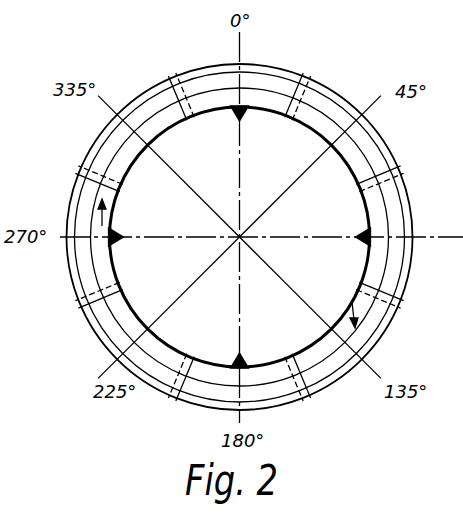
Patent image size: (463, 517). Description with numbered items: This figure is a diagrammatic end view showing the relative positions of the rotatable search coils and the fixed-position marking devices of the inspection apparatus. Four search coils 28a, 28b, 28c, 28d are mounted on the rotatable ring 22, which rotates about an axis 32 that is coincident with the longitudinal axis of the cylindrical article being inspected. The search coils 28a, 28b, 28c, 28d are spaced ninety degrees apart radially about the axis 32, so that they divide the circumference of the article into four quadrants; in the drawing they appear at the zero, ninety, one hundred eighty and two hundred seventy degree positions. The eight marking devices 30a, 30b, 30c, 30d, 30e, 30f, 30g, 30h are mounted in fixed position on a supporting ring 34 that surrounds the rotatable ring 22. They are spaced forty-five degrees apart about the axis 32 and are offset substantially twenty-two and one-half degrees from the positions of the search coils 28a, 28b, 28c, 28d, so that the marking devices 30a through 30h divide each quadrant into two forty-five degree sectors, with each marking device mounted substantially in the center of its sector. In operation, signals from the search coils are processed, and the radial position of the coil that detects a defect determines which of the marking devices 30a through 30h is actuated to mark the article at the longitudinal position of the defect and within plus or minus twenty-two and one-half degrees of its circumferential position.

The rotatable ring 22 is at (258, 100).
The supporting ring 34 is at (322, 85).
The search coil 28a is at (243, 124).
The search coil 28b is at (355, 234).
The search coil 28c is at (243, 350).
The search coil 28d is at (124, 238).
The marking device 30a is at (284, 128).
The marking device 30b is at (355, 194).
The marking device 30c is at (352, 278).
The marking device 30d is at (284, 353).
The marking device 30e is at (194, 357).
The marking device 30f is at (126, 296).
The marking device 30g is at (132, 196).
The marking device 30h is at (194, 128).
The axis 32 is at (242, 239).